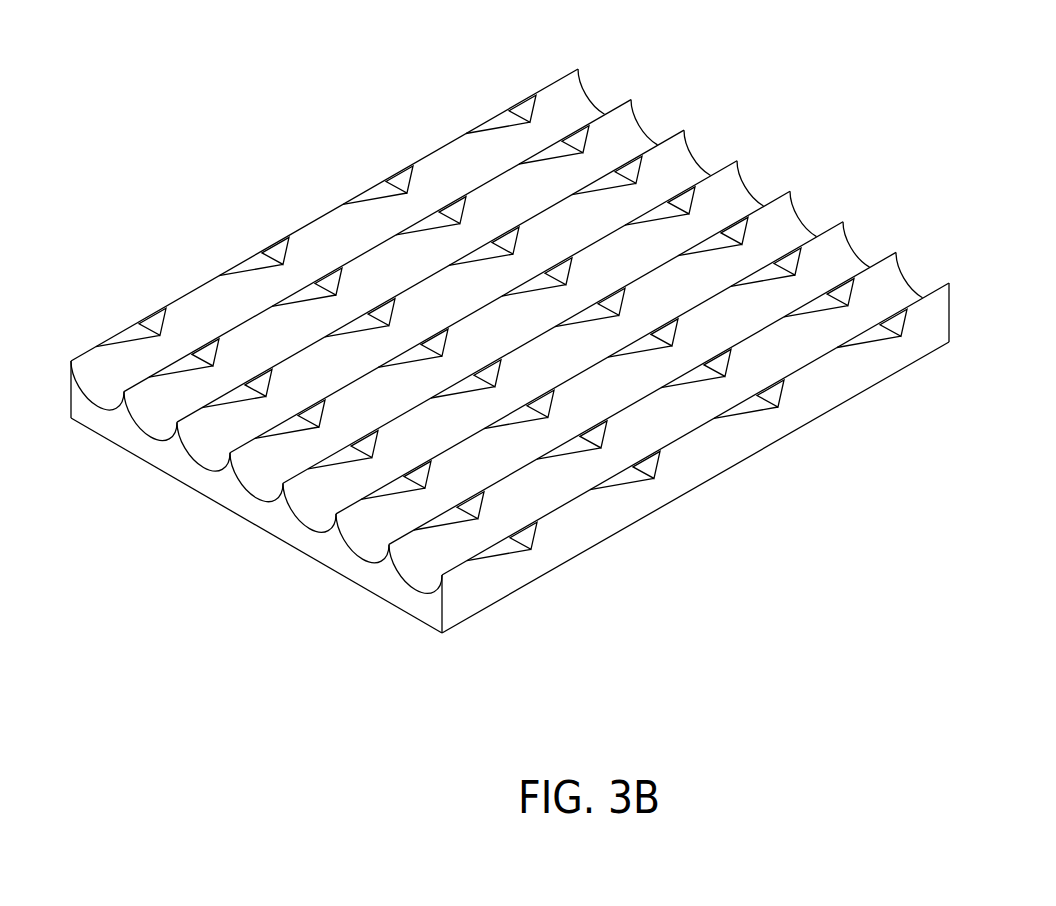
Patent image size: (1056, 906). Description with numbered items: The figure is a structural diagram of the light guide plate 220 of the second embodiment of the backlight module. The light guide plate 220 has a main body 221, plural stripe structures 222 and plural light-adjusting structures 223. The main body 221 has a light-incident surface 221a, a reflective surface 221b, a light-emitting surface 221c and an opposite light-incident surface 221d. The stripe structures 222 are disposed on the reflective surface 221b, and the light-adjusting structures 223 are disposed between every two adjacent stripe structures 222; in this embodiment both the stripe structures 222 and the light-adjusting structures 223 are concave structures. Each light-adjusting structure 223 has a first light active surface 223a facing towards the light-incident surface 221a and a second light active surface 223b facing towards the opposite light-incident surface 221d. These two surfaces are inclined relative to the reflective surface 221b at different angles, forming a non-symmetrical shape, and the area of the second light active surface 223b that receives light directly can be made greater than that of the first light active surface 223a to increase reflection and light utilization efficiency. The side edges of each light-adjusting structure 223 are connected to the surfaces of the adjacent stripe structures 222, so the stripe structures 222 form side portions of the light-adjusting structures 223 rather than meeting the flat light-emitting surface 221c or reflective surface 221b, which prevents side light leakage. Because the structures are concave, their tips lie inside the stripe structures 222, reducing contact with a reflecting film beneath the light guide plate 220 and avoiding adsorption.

The light guide plate 220 is at (99, 128).
The main body 221 is at (497, 274).
The light-incident surface 221a is at (277, 527).
The reflective surface 221b is at (764, 229).
The light-emitting surface 221c is at (868, 392).
The opposite light-incident surface 221d is at (942, 316).
The stripe structures 222 is at (423, 590).
The light-adjusting structures 223 is at (501, 391).
The first light active surface 223a is at (535, 533).
The second light active surface 223b is at (500, 552).